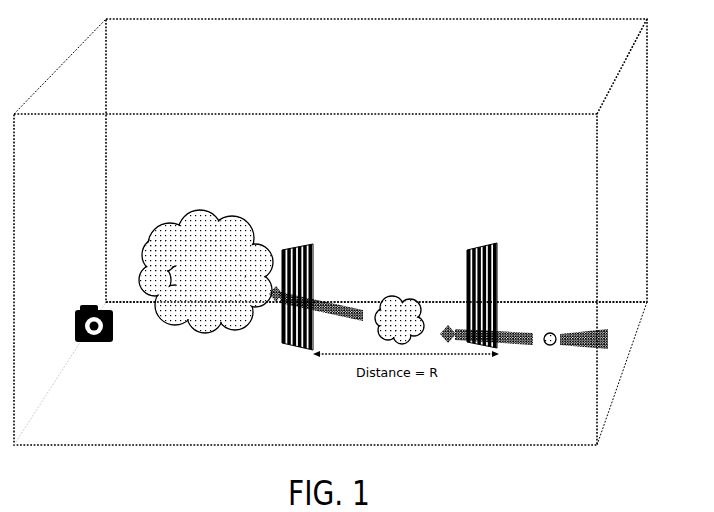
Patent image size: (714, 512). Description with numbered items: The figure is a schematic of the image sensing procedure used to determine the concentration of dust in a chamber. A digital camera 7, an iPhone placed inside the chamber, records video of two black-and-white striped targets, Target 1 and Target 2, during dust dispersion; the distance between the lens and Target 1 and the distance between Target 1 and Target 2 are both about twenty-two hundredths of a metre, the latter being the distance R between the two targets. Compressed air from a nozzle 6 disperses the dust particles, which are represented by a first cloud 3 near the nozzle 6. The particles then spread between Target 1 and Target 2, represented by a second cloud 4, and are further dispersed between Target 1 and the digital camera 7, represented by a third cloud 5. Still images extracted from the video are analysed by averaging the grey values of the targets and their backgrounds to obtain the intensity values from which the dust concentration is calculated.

The Target 1 is at (303, 284).
The Target 2 is at (482, 281).
The First cloud 3 is at (550, 333).
The Second cloud 4 is at (403, 298).
The Third cloud 5 is at (198, 218).
The Nozzle 6 is at (586, 353).
The Digital camera 7 is at (86, 338).